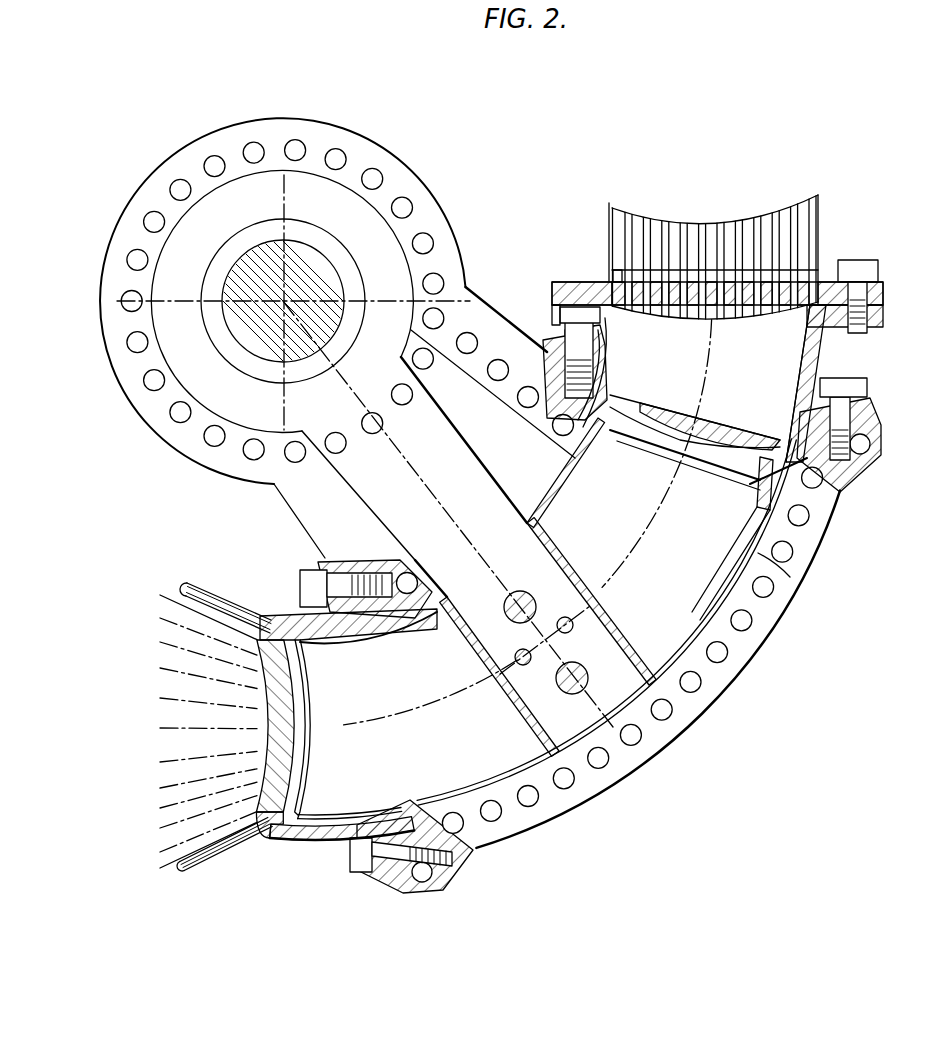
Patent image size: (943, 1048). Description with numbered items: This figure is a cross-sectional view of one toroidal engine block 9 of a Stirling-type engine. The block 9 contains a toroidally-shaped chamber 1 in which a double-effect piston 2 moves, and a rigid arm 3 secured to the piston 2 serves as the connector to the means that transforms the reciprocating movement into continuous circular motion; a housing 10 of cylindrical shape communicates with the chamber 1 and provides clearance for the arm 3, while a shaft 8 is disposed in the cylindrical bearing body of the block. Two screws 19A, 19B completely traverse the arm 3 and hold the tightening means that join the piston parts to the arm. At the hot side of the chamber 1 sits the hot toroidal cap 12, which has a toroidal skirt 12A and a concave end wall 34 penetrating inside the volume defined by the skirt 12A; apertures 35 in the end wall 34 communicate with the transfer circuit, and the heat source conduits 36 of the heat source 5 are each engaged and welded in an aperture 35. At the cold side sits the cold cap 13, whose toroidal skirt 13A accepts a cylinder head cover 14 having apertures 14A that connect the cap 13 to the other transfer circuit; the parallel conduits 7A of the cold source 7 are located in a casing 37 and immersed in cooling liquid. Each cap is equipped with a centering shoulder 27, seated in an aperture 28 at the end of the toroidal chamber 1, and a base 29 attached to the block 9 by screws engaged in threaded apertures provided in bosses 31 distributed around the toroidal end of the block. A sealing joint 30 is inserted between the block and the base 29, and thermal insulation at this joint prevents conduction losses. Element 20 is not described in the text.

The chamber 1 is at (791, 577).
The double-effect piston 2 is at (507, 785).
The rigid arm 3 is at (462, 534).
The heat source 5 is at (210, 870).
The cold source 7 is at (600, 233).
The conduits of cold source 7A is at (666, 232).
The shaft 8 is at (325, 281).
The engine block 9 is at (625, 778).
The housing 10 is at (480, 422).
The hot toroidal cap 12 is at (296, 845).
The toroidal skirt 12A is at (324, 836).
The cold cap 13 is at (836, 361).
The toroidal skirt 13A is at (815, 350).
The cylinder head cover 14 is at (572, 290).
The apertures 14A is at (656, 314).
The screw 19A is at (530, 579).
The screw 19B is at (573, 623).
The baffle 20 is at (612, 401).
The centering shoulder 27 is at (380, 630).
The aperture 28 is at (452, 868).
The base 29 is at (546, 350).
The sealing joint 30 is at (352, 615).
The bosses 31 is at (450, 882).
The concave end wall 34 is at (277, 712).
The apertures 35 is at (267, 616).
The heat source conduits 36 is at (200, 582).
The casing 37 is at (608, 207).